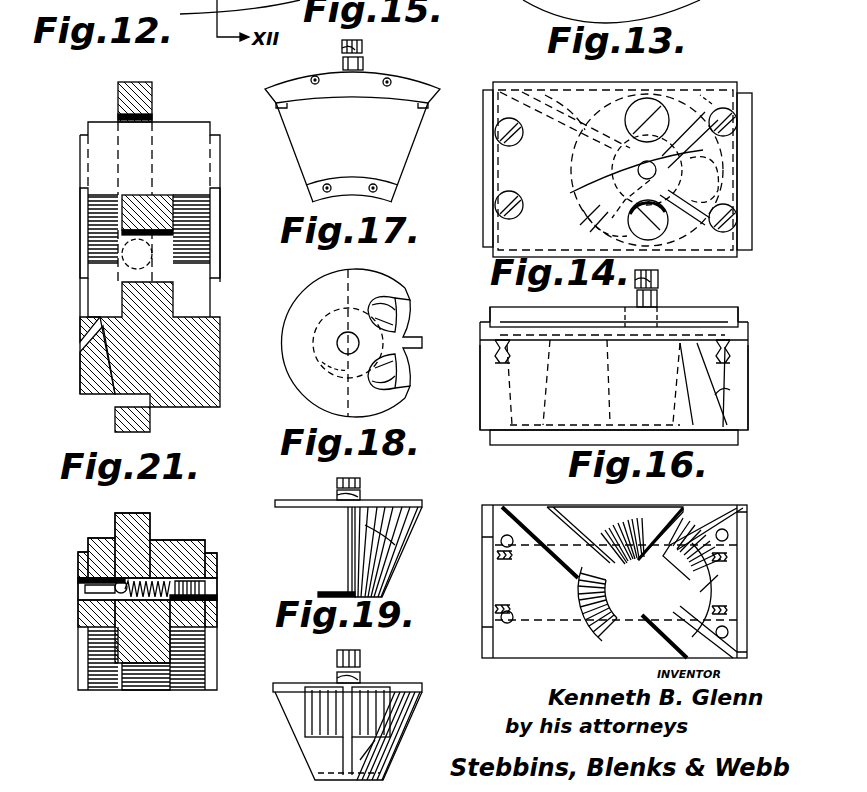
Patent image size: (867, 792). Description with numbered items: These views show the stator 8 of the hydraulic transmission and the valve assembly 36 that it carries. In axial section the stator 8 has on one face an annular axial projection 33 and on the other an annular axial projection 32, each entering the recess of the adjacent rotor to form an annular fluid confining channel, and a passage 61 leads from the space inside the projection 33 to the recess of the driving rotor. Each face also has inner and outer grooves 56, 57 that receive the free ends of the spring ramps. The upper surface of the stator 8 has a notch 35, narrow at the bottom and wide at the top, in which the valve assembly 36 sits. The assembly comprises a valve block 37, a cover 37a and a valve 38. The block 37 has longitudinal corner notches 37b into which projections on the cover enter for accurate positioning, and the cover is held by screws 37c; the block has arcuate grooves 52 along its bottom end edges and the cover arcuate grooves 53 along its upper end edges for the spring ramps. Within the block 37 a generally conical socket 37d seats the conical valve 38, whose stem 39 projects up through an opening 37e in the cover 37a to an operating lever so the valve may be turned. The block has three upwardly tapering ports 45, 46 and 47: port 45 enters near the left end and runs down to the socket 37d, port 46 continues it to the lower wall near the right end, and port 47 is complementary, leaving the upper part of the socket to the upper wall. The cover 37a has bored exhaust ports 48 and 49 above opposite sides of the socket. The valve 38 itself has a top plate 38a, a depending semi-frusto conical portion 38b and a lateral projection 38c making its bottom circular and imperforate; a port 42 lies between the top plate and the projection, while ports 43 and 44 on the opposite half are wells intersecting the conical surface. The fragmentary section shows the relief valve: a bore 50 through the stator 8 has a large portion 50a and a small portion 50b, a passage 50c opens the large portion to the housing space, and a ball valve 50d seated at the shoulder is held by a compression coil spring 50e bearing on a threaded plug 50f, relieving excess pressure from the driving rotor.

In FIG. 12, the stator 8 is at (104, 392).
In FIG. 21, the stator 8 is at (100, 615).
In FIG. 12, the annular axial projection 32 is at (236, 318).
In FIG. 12, the annular axial projection 33 is at (80, 327).
In FIG. 12, the notch 35 is at (135, 148).
In FIG. 15, the valve assembly 36 is at (290, 140).
In FIG. 13, the valve assembly 36 is at (745, 90).
In FIG. 15, the valve block 37 is at (365, 146).
In FIG. 14, the valve block 37 is at (482, 378).
In FIG. 16, the valve block 37 is at (740, 532).
In FIG. 15, the cover 37a is at (372, 82).
In FIG. 13, the cover 37a is at (740, 186).
In FIG. 14, the cover 37a is at (540, 322).
In FIG. 15, the longitudinal corner notches 37b is at (424, 105).
In FIG. 16, the longitudinal corner notches 37b is at (580, 507).
In FIG. 13, the screws 37c is at (512, 195).
In FIG. 16, the conical socket 37d is at (620, 602).
In FIG. 13, the opening 37e is at (740, 150).
In FIG. 17, the valve 38 is at (395, 288).
In FIG. 14, the valve 38 is at (720, 372).
In FIG. 18, the valve 38 is at (402, 506).
In FIG. 19, the valve 38 is at (412, 708).
In FIG. 17, the top plate 38a is at (303, 293).
In FIG. 18, the top plate 38a is at (284, 500).
In FIG. 19, the top plate 38a is at (347, 687).
In FIG. 18, the semi-frusto conical portion 38b is at (380, 575).
In FIG. 19, the semi-frusto conical portion 38b is at (318, 754).
In FIG. 18, the lateral projection 38c is at (316, 594).
In FIG. 19, the lateral projection 38c is at (372, 762).
In FIG. 15, the stem 39 is at (343, 62).
In FIG. 17, the stem 39 is at (342, 340).
In FIG. 13, the stem 39 is at (640, 172).
In FIG. 14, the stem 39 is at (658, 299).
In FIG. 18, the stem 39 is at (360, 487).
In FIG. 19, the stem 39 is at (360, 670).
In FIG. 17, the port 42 is at (345, 385).
In FIG. 13, the port 42 is at (578, 226).
In FIG. 14, the port 42 is at (672, 378).
In FIG. 18, the port 42 is at (348, 540).
In FIG. 17, the port 43 is at (396, 368).
In FIG. 13, the port 43 is at (603, 240).
In FIG. 18, the port 43 is at (395, 545).
In FIG. 19, the port 43 is at (324, 688).
In FIG. 17, the port 44 is at (396, 315).
In FIG. 13, the port 44 is at (651, 183).
In FIG. 19, the port 44 is at (372, 690).
In FIG. 13, the port 45 is at (560, 92).
In FIG. 14, the port 45 is at (593, 382).
In FIG. 16, the port 45 is at (540, 514).
In FIG. 13, the port 46 is at (703, 246).
In FIG. 14, the port 46 is at (728, 390).
In FIG. 16, the port 46 is at (715, 643).
In FIG. 13, the port 47 is at (700, 100).
In FIG. 16, the port 47 is at (686, 523).
In FIG. 13, the port 48 is at (648, 100).
In FIG. 13, the port 49 is at (656, 232).
In FIG. 21, the bore 50 is at (92, 588).
In FIG. 21, the portion of relatively great diameter 50a is at (168, 586).
In FIG. 21, the portion of relatively small diameter 50b is at (88, 564).
In FIG. 21, the passage 50c is at (152, 570).
In FIG. 21, the ball valve 50d is at (110, 594).
In FIG. 21, the compression coil spring 50e is at (140, 684).
In FIG. 21, the plug 50f is at (217, 597).
In FIG. 15, the arcuate grooves 52 is at (322, 192).
In FIG. 14, the arcuate grooves 52 is at (490, 432).
In FIG. 15, the arcuate grooves 53 is at (284, 94).
In FIG. 13, the arcuate grooves 53 is at (485, 185).
In FIG. 14, the arcuate grooves 53 is at (490, 316).
In FIG. 12, the inner grooves 56 is at (82, 200).
In FIG. 14, the inner grooves 56 is at (480, 407).
In FIG. 12, the outer grooves 57 is at (88, 132).
In FIG. 12, the passage 61 is at (93, 354).